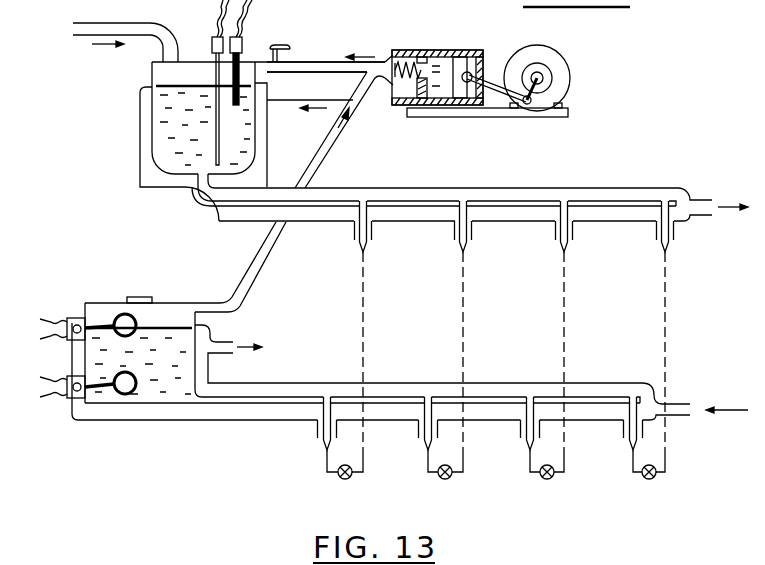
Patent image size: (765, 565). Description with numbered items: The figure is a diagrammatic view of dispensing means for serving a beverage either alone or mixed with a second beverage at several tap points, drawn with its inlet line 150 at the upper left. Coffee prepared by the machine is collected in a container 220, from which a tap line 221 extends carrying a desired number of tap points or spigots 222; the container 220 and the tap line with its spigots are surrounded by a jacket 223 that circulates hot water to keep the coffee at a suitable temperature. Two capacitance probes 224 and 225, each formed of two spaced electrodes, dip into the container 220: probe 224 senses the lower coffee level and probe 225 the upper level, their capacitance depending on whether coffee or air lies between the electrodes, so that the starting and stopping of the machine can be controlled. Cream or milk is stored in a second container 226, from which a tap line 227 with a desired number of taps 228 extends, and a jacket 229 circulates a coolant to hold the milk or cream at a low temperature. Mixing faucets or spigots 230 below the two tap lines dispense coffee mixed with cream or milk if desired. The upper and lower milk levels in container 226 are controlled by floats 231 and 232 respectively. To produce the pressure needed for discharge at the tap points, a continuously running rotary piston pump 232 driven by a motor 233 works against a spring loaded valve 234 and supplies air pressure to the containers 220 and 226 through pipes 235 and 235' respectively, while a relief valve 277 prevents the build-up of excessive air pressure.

The inlet pipe 150 is at (130, 27).
The container 220 is at (159, 70).
The tap line 221 is at (415, 203).
The tap points or spigots 222 is at (360, 225).
The jacket 223 is at (537, 193).
The capacitance probe 224 is at (223, 145).
The capacitance probe 225 is at (240, 76).
The container 226 is at (197, 318).
The tap line 227 is at (270, 400).
The taps 228 is at (324, 421).
The jacket 229 is at (398, 388).
The mixing faucets or spigots 230 is at (437, 477).
The float 231 is at (98, 323).
The float 232 is at (412, 97).
The motor 233 is at (563, 70).
The spring loaded valve 234 is at (397, 52).
The pipe 235 is at (326, 49).
The pipe 235' is at (340, 130).
The relief valve 277 is at (280, 47).